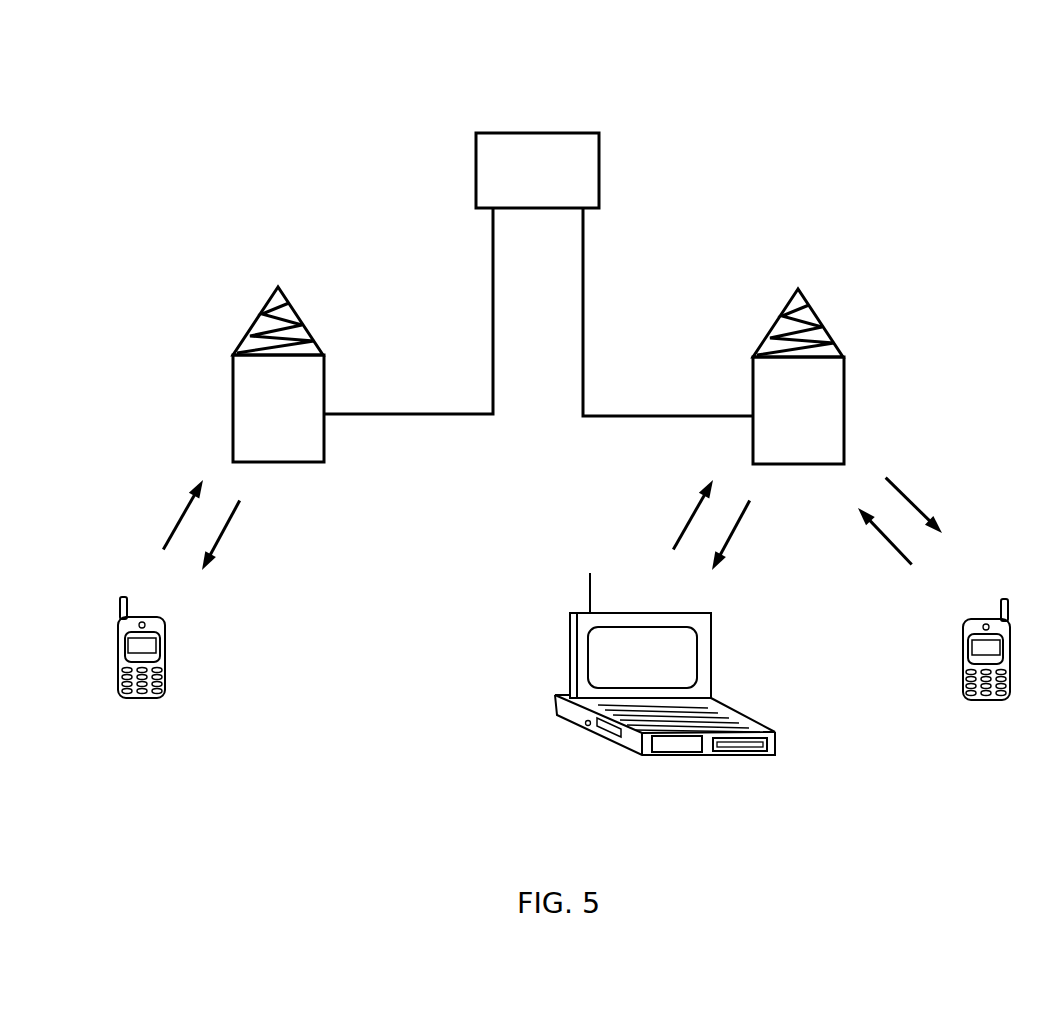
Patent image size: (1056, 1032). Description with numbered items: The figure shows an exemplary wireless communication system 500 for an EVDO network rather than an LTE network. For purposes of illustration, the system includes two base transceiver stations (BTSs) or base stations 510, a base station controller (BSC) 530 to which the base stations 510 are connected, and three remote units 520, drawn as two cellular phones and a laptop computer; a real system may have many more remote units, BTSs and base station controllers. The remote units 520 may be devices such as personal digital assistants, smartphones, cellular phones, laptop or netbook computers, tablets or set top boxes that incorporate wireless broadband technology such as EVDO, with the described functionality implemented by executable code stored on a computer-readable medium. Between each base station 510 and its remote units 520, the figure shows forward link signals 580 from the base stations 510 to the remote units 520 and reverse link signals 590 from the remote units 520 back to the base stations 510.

The wireless communication system 500 is at (259, 53).
The base transceiver station 510 is at (258, 318).
The remote unit 520 is at (165, 620).
The base station controller 530 is at (552, 133).
The forward link signal 580 is at (226, 530).
The reverse link signal 590 is at (180, 513).